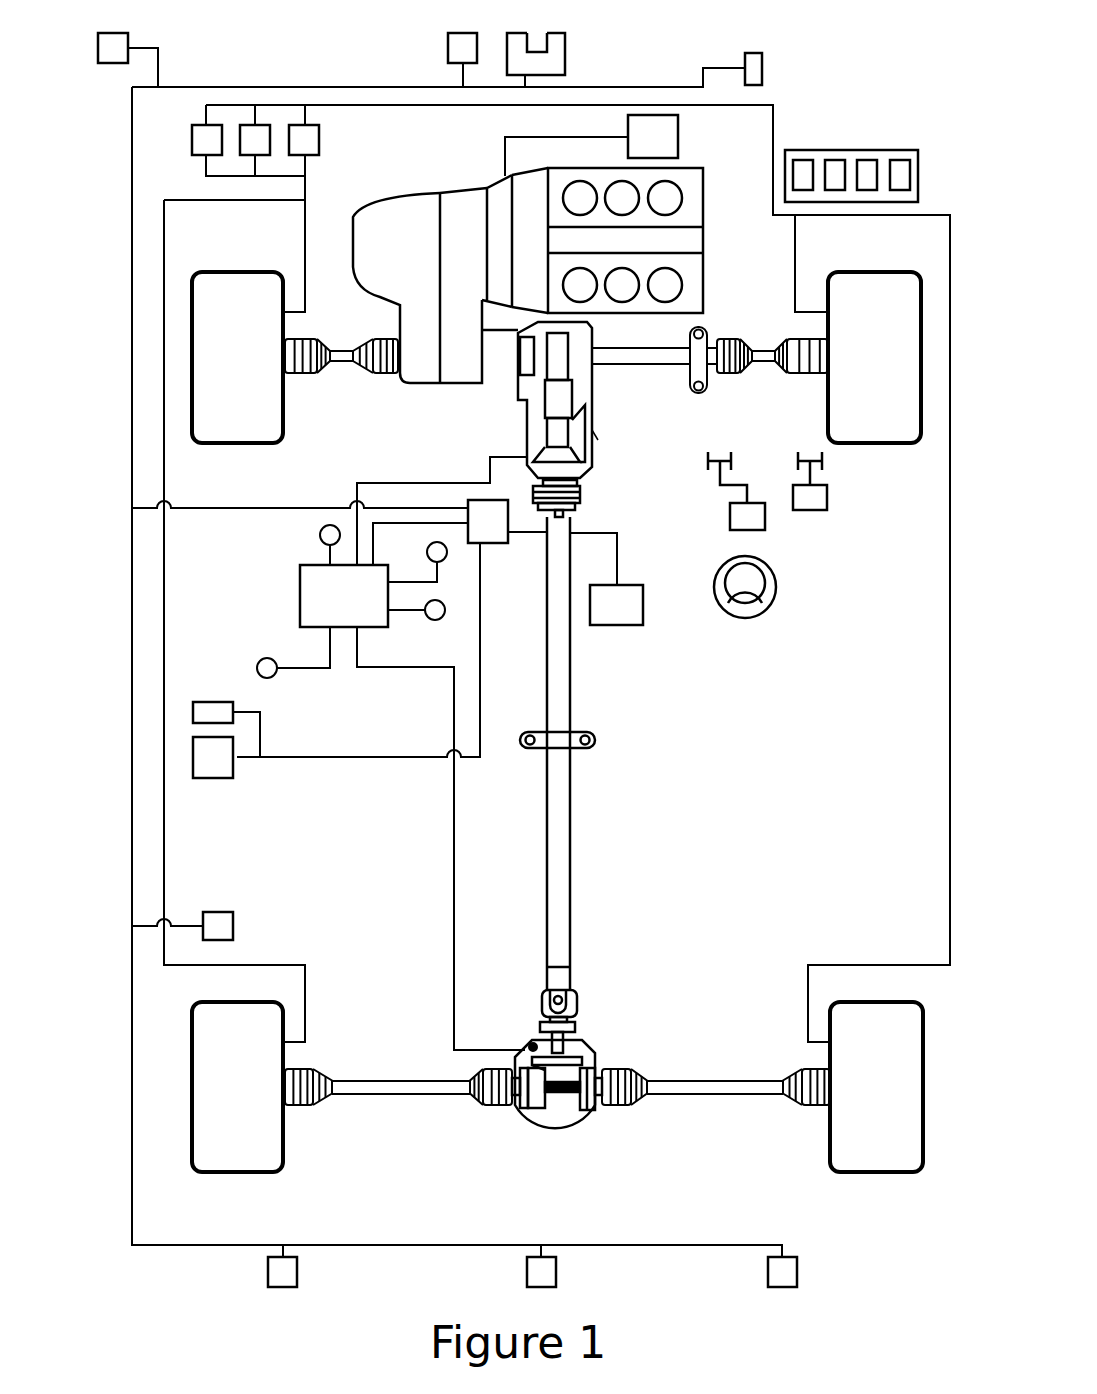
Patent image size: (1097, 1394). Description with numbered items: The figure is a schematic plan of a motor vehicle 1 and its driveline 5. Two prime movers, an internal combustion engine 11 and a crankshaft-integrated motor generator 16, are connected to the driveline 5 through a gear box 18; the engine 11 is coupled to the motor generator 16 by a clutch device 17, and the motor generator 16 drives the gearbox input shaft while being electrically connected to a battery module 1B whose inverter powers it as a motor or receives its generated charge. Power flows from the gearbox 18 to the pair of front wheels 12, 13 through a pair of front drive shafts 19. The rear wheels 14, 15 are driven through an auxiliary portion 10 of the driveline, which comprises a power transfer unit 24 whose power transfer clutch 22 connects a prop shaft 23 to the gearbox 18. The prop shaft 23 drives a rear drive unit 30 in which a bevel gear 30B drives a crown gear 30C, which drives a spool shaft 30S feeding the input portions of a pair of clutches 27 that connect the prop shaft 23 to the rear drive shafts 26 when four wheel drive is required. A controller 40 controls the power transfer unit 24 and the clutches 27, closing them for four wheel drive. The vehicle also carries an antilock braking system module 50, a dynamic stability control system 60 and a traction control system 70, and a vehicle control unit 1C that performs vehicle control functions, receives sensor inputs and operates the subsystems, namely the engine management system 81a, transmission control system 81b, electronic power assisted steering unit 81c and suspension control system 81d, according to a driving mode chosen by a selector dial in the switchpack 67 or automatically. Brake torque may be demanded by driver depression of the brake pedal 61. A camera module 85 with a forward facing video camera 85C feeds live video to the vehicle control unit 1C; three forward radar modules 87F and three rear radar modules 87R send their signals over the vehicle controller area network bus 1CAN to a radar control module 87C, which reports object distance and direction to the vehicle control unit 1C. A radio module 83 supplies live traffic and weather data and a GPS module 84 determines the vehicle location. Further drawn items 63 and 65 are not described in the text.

The motor vehicle 1 is at (824, 66).
The controller area network bus 1CAN is at (132, 330).
The battery module 1B is at (653, 136).
The vehicle control unit 1C is at (495, 545).
The driveline 5 is at (372, 799).
The auxiliary portion 10 is at (598, 432).
The internal combustion engine 11 is at (692, 182).
The front wheel 12 is at (236, 292).
The front wheel 13 is at (876, 292).
The rear wheel 14 is at (236, 1150).
The rear wheel 15 is at (878, 1150).
The crankshaft-integrated motor generator 16 is at (498, 190).
The clutch device 17 is at (543, 254).
The gear box 18 is at (455, 215).
The front drive shafts 19 is at (343, 358).
The power transfer clutch 22 is at (528, 350).
The prop shaft 23 is at (573, 675).
The power transfer unit 24 is at (594, 410).
The rear drive shafts 26 is at (413, 1095).
The clutches 27 is at (521, 1102).
The rear drive unit 30 is at (578, 1130).
The bevel gear 30B is at (578, 1065).
The crown gear 30C is at (537, 1105).
The spool shaft 30S is at (558, 1092).
The controller 40 is at (300, 588).
The antilock braking system module 50 is at (252, 132).
The dynamic stability control system 60 is at (307, 132).
The brake pedal 61 is at (768, 520).
The brake pedal 63 is at (830, 497).
The steering wheel 65 is at (764, 600).
The switchpack 67 is at (631, 617).
The traction control system 70 is at (195, 142).
The engine management system 81a is at (800, 162).
The transmission control system 81b is at (835, 162).
The electronic power assisted steering unit 81c is at (867, 162).
The suspension control system 81d is at (902, 162).
The radio module 83 is at (213, 702).
The global positioning system module 84 is at (213, 778).
The camera module 85 is at (567, 57).
The forward facing video camera 85C is at (537, 33).
The radar control module 87C is at (214, 912).
The forward radar transmit/receive modules 87F is at (113, 33).
The rear radar transmit/receive modules 87R is at (268, 1270).